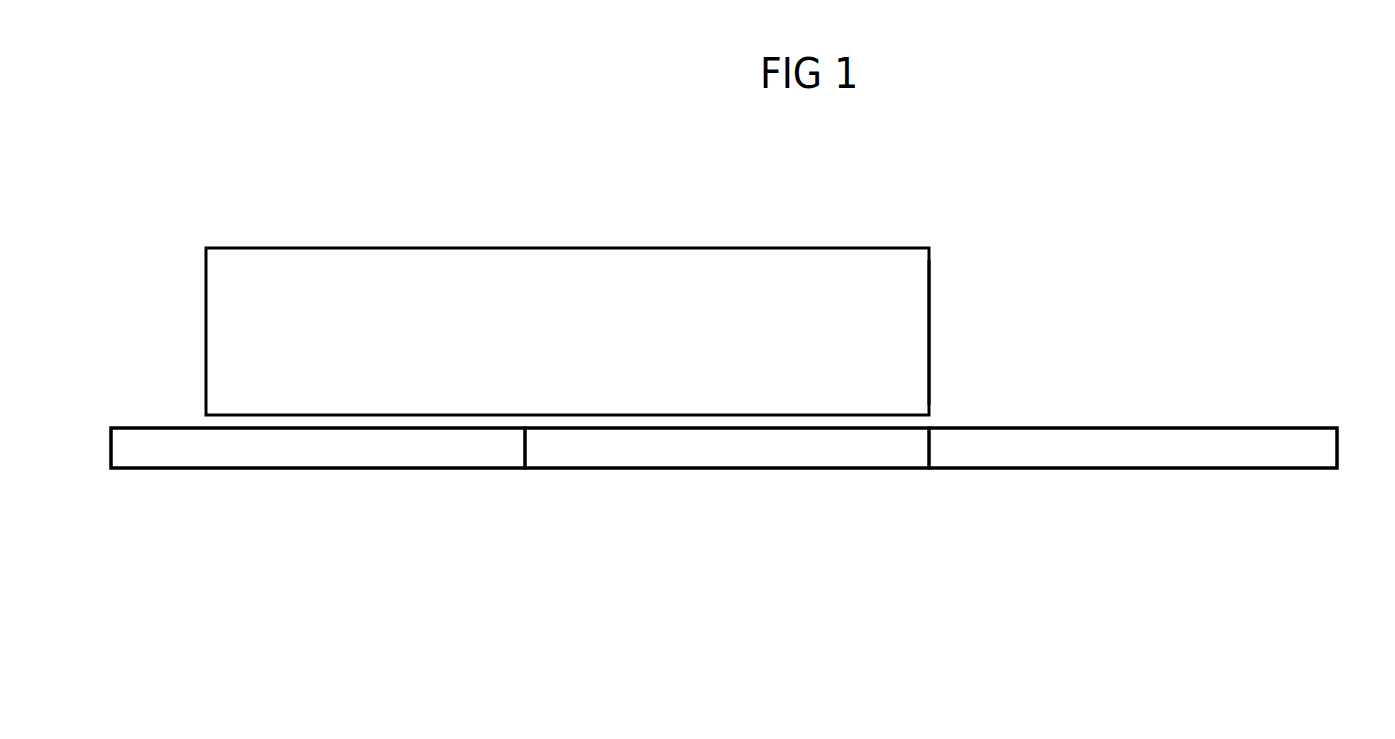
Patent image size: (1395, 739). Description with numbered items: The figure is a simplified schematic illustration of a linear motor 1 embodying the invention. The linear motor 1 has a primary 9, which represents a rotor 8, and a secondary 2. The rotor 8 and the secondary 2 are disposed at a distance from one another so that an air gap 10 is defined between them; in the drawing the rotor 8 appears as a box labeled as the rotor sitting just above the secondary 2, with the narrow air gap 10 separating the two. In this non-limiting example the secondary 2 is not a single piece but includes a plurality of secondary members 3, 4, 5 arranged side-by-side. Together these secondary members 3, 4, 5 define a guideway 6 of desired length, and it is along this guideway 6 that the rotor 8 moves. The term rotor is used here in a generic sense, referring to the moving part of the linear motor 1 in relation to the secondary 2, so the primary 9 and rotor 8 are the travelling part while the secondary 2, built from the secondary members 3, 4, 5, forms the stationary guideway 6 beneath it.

The linear motor 1 is at (553, 181).
The secondary 2 is at (140, 535).
The secondary member 3 is at (341, 458).
The secondary member 4 is at (747, 458).
The secondary member 5 is at (1140, 458).
The guideway 6 is at (1295, 396).
The rotor 8 is at (916, 343).
The primary 9 is at (813, 233).
The air gap 10 is at (202, 421).